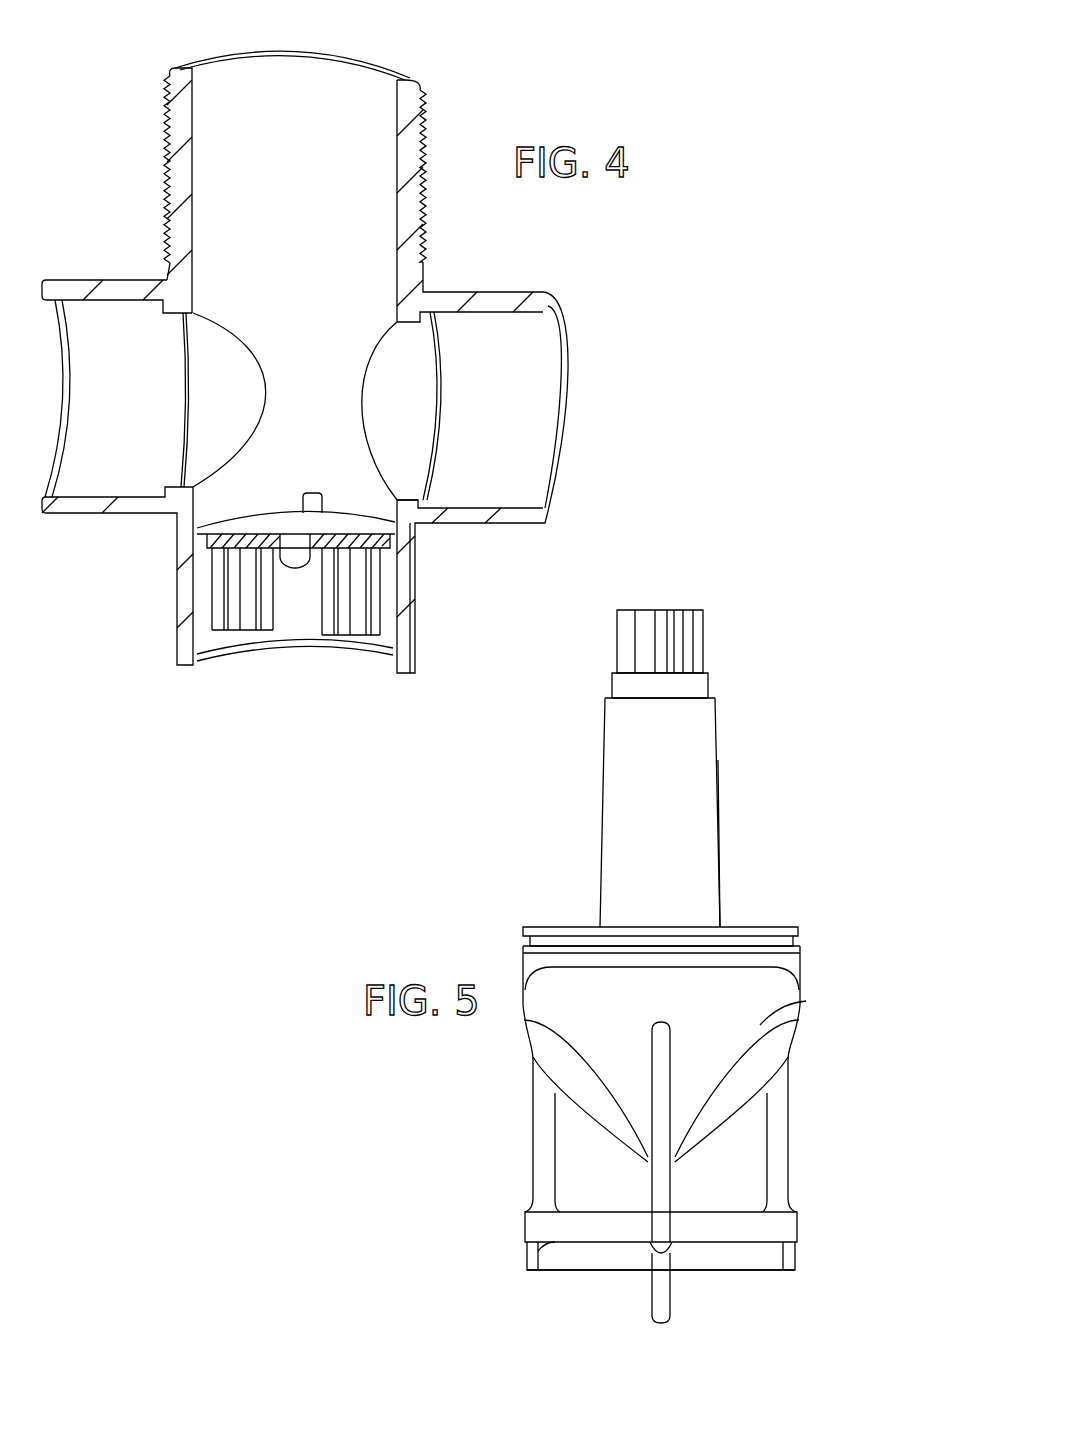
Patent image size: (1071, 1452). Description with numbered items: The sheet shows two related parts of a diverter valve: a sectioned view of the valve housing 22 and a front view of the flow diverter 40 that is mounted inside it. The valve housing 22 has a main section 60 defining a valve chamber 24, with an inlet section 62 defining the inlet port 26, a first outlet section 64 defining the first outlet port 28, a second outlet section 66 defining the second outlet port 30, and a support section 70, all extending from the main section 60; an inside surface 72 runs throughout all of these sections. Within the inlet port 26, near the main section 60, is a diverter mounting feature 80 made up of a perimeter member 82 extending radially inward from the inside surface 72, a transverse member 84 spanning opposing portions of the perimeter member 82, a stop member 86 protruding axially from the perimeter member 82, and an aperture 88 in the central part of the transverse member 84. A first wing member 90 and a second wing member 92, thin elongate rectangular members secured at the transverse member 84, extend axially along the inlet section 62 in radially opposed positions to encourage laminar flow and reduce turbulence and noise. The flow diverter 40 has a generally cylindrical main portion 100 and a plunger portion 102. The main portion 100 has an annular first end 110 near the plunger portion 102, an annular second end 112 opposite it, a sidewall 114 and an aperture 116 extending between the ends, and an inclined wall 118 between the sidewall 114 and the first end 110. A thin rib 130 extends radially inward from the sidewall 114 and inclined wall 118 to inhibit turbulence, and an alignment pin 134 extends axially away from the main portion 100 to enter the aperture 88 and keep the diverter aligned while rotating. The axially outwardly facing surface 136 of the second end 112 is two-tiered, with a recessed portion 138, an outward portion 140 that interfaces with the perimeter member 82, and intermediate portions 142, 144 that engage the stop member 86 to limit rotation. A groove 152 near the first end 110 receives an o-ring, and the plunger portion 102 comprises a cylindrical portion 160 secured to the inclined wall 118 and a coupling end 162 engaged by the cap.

In FIG. 4, the valve housing 22 is at (417, 533).
In FIG. 4, the valve chamber 24 is at (350, 411).
In FIG. 4, the inlet port 26 is at (300, 658).
In FIG. 4, the first outlet port 28 is at (506, 381).
In FIG. 4, the second outlet port 30 is at (148, 400).
In FIG. 5, the flow diverter 40 is at (785, 648).
In FIG. 4, the main section 60 is at (258, 327).
In FIG. 4, the inlet section 62 is at (405, 580).
In FIG. 4, the first outlet section 64 is at (490, 303).
In FIG. 4, the second outlet section 66 is at (78, 282).
In FIG. 4, the support section 70 is at (412, 147).
In FIG. 4, the inside surface 72 is at (225, 83).
In FIG. 4, the diverter mounting feature 80 is at (353, 510).
In FIG. 4, the perimeter member 82 is at (252, 517).
In FIG. 4, the transverse member 84 is at (227, 542).
In FIG. 4, the stop member 86 is at (313, 494).
In FIG. 4, the aperture 88 is at (300, 569).
In FIG. 4, the first wing member 90 is at (253, 632).
In FIG. 4, the second wing member 92 is at (353, 638).
In FIG. 5, the main portion 100 is at (797, 1038).
In FIG. 5, the plunger portion 102 is at (720, 819).
In FIG. 5, the first end 110 is at (800, 953).
In FIG. 5, the second end 112 is at (798, 1225).
In FIG. 5, the sidewall 114 is at (747, 1152).
In FIG. 5, the aperture 116 is at (522, 1087).
In FIG. 5, the inclined wall 118 is at (806, 1001).
In FIG. 5, the rib 130 is at (648, 1047).
In FIG. 5, the alignment pin 134 is at (673, 1292).
In FIG. 5, the axially outwardly facing surface 136 is at (523, 1273).
In FIG. 5, the recessed portion 138 is at (527, 1255).
In FIG. 5, the outward portion 140 is at (575, 1272).
In FIG. 5, the intermediate portion 142 is at (527, 1262).
In FIG. 5, the intermediate portion 144 is at (798, 1255).
In FIG. 5, the groove 152 is at (530, 938).
In FIG. 5, the cylindrical portion 160 is at (710, 782).
In FIG. 5, the coupling end 162 is at (702, 633).